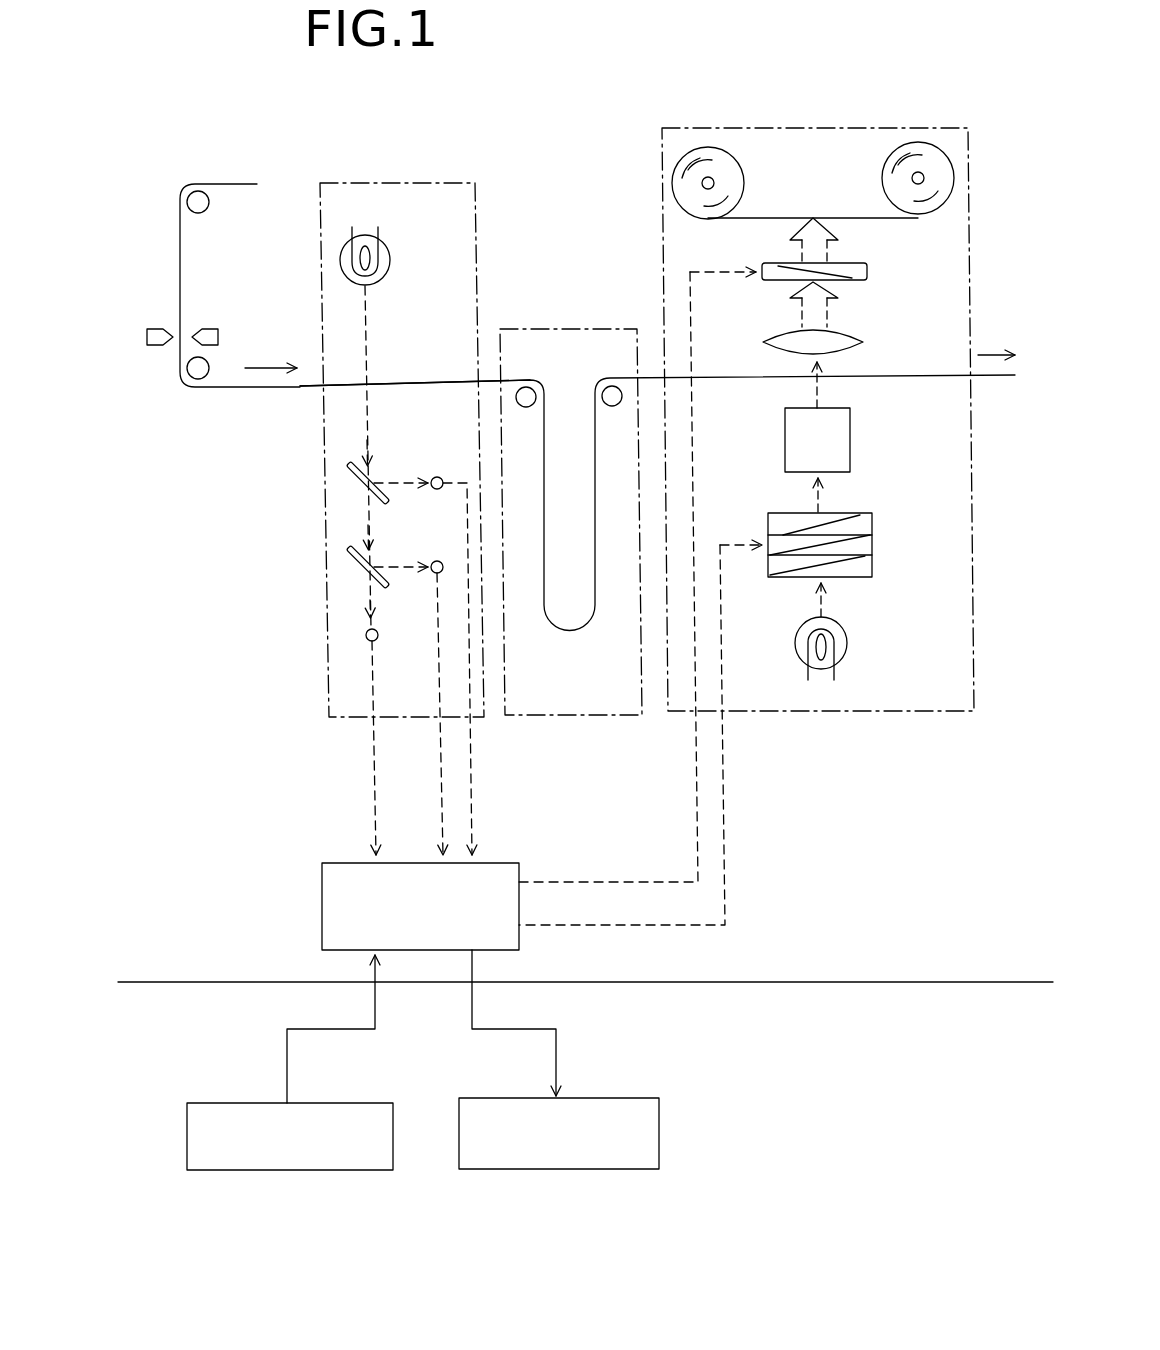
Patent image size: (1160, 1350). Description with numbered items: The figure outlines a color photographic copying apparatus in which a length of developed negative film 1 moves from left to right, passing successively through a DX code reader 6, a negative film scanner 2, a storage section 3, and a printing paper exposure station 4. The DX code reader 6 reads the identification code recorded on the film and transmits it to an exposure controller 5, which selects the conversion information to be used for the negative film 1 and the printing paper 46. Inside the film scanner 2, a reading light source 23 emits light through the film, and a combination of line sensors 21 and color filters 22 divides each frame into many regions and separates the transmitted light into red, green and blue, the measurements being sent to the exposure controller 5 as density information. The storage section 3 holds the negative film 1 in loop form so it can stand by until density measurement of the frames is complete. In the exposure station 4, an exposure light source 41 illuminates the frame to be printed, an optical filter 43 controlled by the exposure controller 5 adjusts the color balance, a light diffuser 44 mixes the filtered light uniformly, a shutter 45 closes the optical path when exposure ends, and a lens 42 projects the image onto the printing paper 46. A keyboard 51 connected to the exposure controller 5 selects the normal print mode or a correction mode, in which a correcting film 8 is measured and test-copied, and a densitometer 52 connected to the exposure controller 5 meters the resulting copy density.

The negative film 1 is at (274, 386).
The correcting film 8 is at (366, 447).
The negative film scanner 2 is at (408, 183).
The storage section 3 is at (522, 329).
The printing paper exposure station 4 is at (790, 128).
The exposure controller 5 is at (322, 905).
The DX code reader 6 is at (204, 320).
The line sensors 21 is at (438, 477).
The color filters 22 is at (362, 565).
The reading light source 23 is at (387, 273).
The exposure light source 41 is at (847, 640).
The lens 42 is at (858, 340).
The optical filter 43 is at (872, 540).
The light diffuser 44 is at (850, 437).
The shutter 45 is at (867, 272).
The printing paper 46 is at (775, 217).
The keyboard 51 is at (313, 1172).
The densitometer 52 is at (560, 1170).